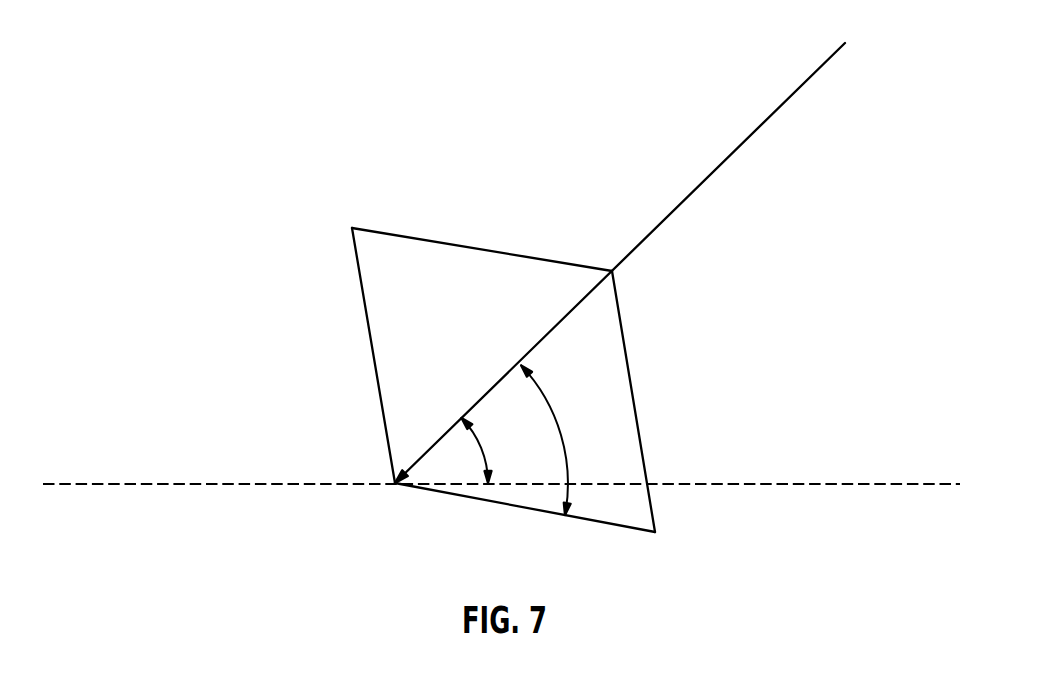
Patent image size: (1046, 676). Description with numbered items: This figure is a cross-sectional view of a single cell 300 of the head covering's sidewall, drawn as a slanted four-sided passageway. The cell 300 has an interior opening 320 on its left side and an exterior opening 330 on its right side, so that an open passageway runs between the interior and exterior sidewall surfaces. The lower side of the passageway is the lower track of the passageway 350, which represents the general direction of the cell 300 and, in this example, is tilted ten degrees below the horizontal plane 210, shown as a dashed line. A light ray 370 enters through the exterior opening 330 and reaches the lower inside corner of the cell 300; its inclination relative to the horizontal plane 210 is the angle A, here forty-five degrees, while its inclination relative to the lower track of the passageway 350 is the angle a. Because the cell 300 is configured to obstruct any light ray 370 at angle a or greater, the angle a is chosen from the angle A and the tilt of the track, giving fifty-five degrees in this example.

The horizontal plane 210 is at (808, 484).
The cell 300 is at (495, 380).
The interior opening 320 is at (367, 336).
The exterior opening 330 is at (629, 340).
The lower track of the passageway 350 is at (578, 506).
The light ray 370 is at (778, 108).
The angle A is at (477, 439).
The angle a is at (548, 402).